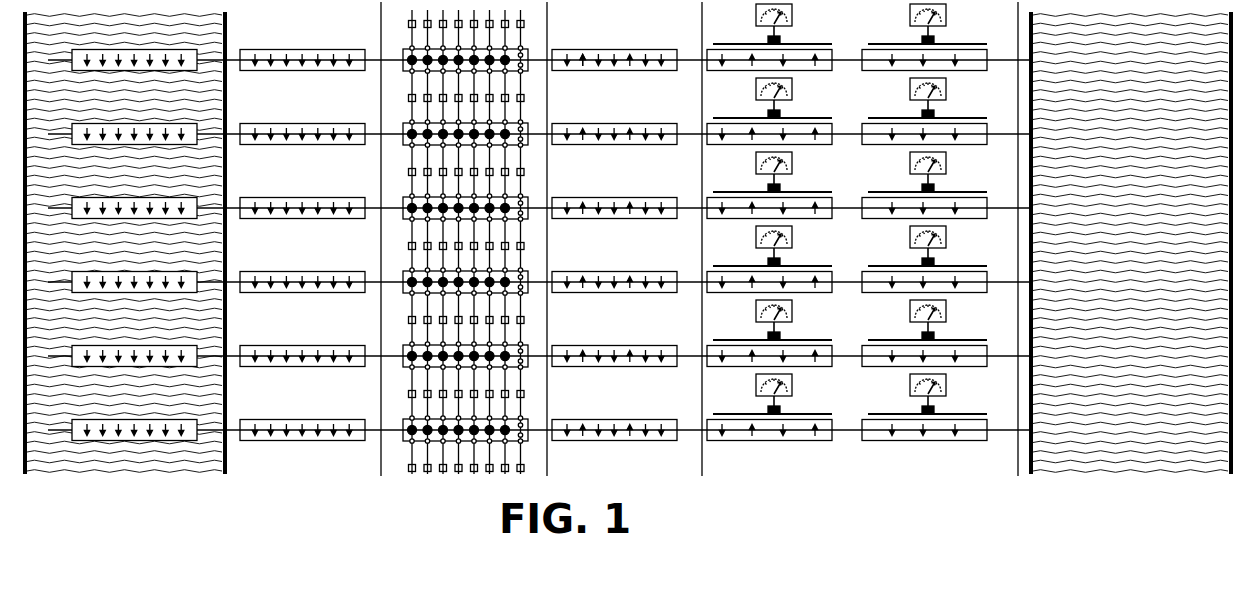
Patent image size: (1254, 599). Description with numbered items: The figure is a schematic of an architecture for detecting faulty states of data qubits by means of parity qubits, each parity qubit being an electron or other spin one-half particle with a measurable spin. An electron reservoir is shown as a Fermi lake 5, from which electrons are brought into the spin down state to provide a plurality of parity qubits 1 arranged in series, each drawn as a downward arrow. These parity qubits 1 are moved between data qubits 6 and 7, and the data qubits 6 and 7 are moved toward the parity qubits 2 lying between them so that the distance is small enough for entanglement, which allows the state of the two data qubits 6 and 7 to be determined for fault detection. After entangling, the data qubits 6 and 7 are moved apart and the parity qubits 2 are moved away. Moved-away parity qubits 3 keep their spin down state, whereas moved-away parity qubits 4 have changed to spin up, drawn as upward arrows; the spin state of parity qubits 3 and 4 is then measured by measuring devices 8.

The parity qubits 1 is at (264, 49).
The parity qubits 2 is at (404, 52).
The parity qubits 3 is at (579, 45).
The parity qubits 4 is at (584, 66).
The Fermi lake 5 is at (232, 105).
The data qubit 6 is at (408, 24).
The data qubit 7 is at (408, 98).
The measuring devices 8 is at (756, 86).